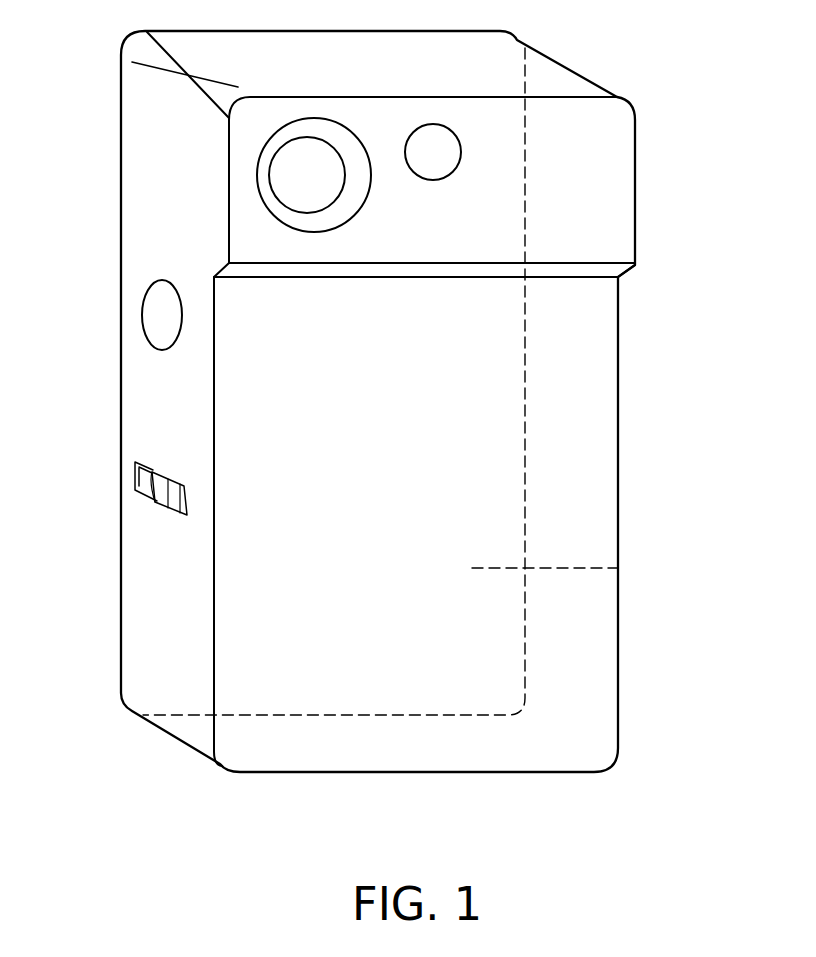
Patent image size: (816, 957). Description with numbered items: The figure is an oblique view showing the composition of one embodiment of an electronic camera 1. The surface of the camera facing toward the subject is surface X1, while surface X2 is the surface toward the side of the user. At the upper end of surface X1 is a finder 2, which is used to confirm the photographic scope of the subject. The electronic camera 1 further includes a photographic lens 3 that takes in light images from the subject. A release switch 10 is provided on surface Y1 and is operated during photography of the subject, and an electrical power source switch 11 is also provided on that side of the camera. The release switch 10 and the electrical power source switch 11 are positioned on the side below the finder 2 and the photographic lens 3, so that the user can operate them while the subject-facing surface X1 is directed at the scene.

The electronic camera 1 is at (557, 750).
The finder 2 is at (452, 147).
The photographic lens 3 is at (305, 195).
The release switch 10 is at (162, 322).
The electrical power source switch 11 is at (152, 505).
The surface facing toward the subject X1 is at (592, 450).
The surface toward the side of the user X2 is at (618, 568).
The surface Y1 is at (142, 130).